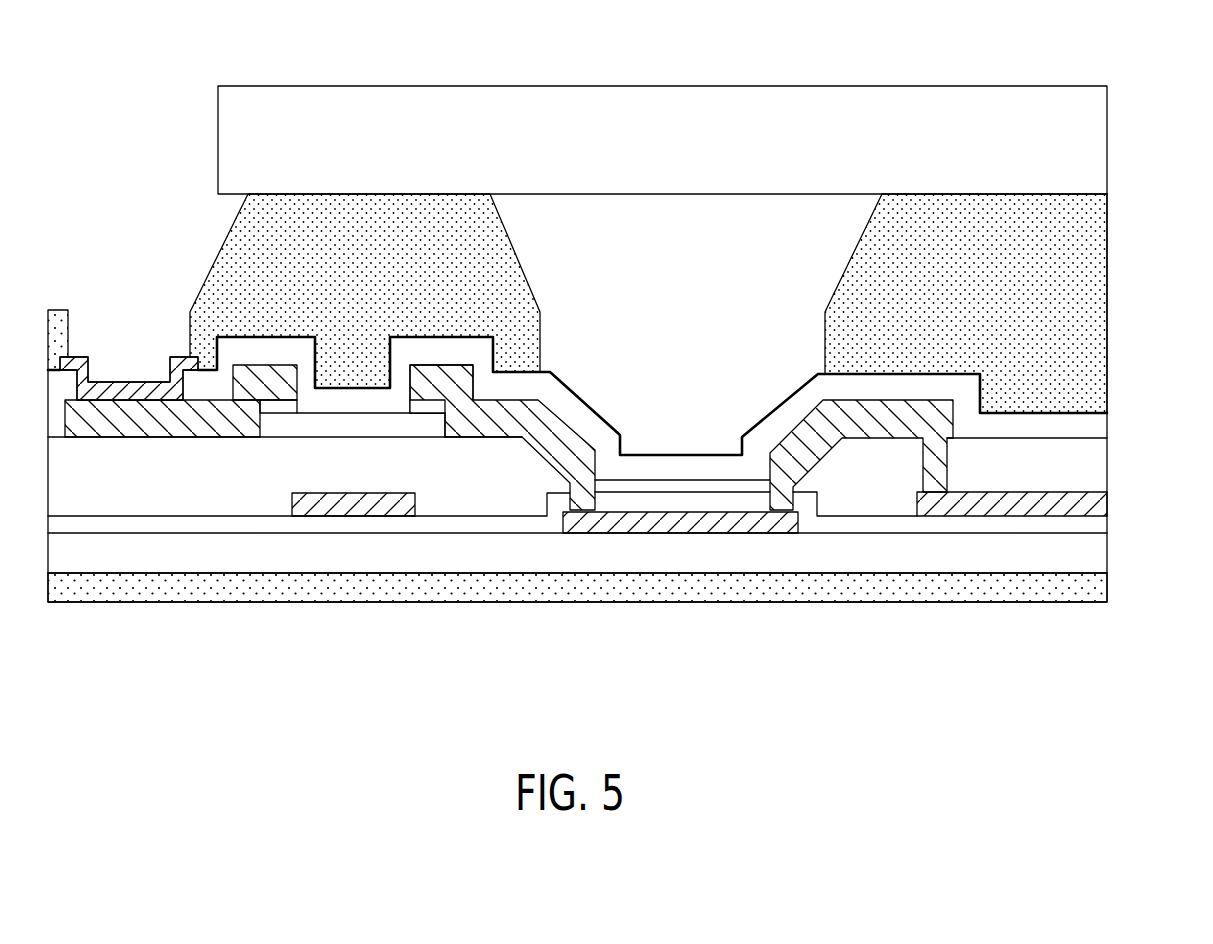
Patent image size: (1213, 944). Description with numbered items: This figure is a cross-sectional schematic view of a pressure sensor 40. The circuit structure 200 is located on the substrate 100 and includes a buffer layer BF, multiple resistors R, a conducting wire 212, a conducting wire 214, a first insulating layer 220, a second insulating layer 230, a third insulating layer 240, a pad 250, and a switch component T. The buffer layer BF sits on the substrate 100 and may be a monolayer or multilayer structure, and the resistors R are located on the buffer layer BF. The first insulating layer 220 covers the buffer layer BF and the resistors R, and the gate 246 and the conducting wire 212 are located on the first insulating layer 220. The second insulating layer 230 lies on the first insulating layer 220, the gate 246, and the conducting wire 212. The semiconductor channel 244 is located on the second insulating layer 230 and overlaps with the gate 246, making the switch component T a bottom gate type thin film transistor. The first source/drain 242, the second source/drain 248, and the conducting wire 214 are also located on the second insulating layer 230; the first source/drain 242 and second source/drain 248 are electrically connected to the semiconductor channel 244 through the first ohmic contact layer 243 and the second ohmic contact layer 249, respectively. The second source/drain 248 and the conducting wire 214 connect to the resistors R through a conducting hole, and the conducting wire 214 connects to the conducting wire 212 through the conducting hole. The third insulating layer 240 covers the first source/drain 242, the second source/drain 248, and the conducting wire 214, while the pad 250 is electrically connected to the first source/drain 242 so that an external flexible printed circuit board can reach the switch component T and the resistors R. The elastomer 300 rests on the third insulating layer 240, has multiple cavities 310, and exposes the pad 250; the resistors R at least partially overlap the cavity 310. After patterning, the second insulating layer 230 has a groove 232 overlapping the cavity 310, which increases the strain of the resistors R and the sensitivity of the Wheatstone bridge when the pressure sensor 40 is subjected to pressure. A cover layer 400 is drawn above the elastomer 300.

The upper substrate / cover 400 is at (1097, 144).
The elastomer 300 is at (1098, 262).
The cavity 310 is at (693, 235).
The substrate 100 is at (1098, 572).
The buffer layer BF is at (617, 558).
The first source/drain 242 is at (192, 425).
The first ohmic contact layer 243 is at (267, 408).
The semiconductor channel 244 is at (283, 427).
The gate 246 is at (352, 507).
The groove 232 is at (545, 458).
The second source/drain 248 is at (443, 383).
The second ohmic contact layer 249 is at (427, 407).
The pad 250 is at (128, 383).
The resistors R is at (690, 525).
The first insulating layer 220 is at (812, 523).
The conducting wire 214 is at (807, 433).
The second insulating layer 230 is at (867, 495).
The conducting wire 212 is at (988, 507).
The third insulating layer 240 is at (913, 388).
The circuit structure 200 is at (1120, 411).
The switch component T is at (513, 670).
The pressure sensor 40 is at (1180, 666).